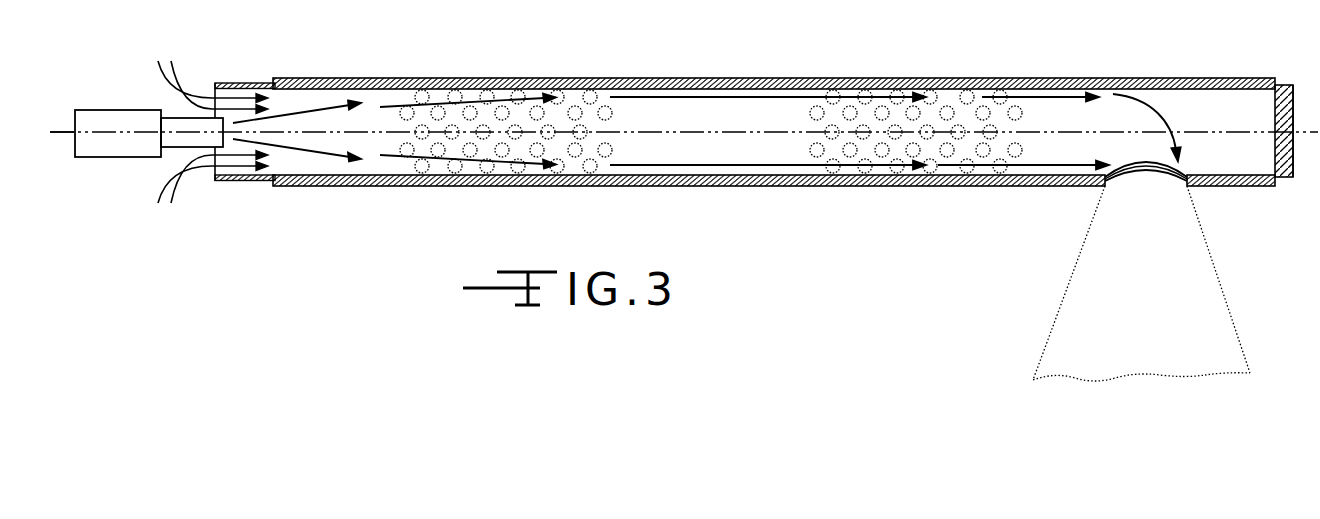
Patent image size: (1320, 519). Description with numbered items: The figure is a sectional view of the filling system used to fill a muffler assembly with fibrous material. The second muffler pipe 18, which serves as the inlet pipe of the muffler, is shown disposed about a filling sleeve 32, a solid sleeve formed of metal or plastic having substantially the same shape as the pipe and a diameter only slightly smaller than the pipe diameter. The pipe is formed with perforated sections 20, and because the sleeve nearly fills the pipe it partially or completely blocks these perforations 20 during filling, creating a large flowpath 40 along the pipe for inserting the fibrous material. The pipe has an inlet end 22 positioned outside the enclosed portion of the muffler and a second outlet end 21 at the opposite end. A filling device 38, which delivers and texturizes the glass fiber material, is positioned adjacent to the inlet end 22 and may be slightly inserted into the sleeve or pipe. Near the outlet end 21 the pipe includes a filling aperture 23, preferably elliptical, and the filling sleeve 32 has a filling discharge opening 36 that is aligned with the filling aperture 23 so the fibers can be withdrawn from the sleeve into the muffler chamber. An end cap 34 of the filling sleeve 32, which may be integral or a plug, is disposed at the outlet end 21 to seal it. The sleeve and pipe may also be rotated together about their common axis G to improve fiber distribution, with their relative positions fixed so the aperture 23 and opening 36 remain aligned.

The second muffler pipe 18 is at (522, 72).
The perforated sections 20 is at (738, 187).
The second outlet end 21 is at (1276, 83).
The inlet end 22 is at (275, 80).
The filling aperture 23 is at (1157, 173).
The filling sleeve 32 is at (243, 181).
The end cap 34 is at (1295, 153).
The filling discharge opening 36 is at (1137, 160).
The filling device 38 is at (118, 108).
The flowpath 40 is at (650, 127).
The common axis G is at (60, 133).